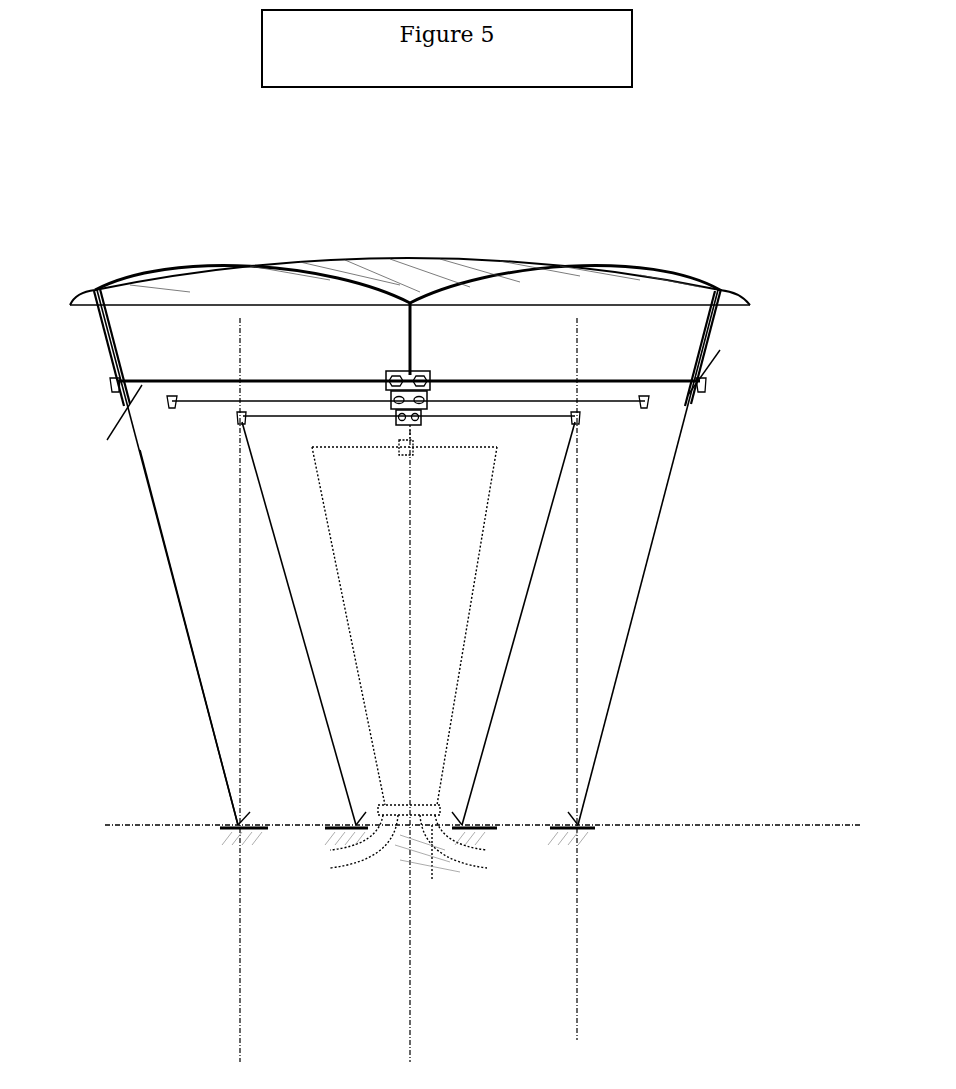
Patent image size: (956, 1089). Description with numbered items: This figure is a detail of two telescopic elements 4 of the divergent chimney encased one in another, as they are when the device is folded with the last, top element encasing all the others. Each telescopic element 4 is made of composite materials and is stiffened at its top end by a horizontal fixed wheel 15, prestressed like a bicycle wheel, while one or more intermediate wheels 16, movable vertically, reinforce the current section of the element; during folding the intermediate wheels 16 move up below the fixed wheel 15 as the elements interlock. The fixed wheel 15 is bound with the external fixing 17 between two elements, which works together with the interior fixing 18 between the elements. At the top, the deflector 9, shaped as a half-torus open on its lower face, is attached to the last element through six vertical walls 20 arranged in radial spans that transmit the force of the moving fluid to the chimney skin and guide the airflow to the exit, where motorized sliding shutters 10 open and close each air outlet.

The telescopic element 4 is at (187, 748).
The deflector 9 is at (473, 240).
The motorized sliding shutters 10 is at (707, 347).
The fixed wheel 15 is at (256, 403).
The intermediate wheel 16 is at (177, 380).
The external fixing between two elements 17 is at (550, 405).
The interior fixing between two elements 18 is at (540, 808).
The vertical walls of the exit duct 20 is at (685, 317).